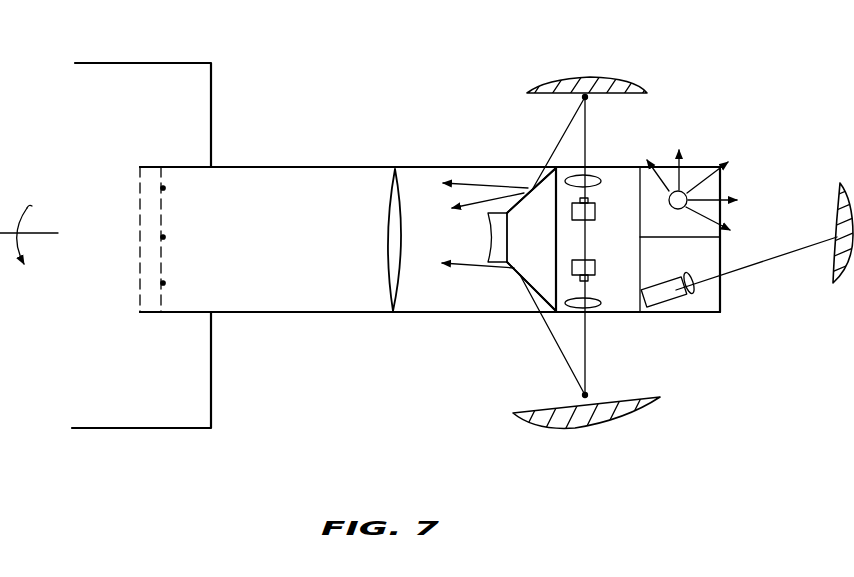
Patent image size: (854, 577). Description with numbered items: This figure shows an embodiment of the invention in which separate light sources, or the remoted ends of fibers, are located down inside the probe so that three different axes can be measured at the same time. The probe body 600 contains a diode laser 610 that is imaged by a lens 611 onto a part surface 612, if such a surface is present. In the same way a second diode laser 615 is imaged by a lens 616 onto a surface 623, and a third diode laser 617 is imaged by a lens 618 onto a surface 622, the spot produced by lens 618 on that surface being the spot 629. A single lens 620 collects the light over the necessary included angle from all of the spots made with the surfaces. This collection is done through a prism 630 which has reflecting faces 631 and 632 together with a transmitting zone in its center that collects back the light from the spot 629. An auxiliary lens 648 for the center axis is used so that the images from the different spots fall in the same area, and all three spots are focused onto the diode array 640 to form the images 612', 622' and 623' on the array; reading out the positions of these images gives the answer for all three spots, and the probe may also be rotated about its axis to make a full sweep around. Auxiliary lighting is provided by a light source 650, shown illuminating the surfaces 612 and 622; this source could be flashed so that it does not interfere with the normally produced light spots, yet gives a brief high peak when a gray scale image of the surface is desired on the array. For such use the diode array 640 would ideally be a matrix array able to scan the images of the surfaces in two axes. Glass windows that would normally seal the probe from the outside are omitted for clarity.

The probe body 600 is at (356, 167).
The diode array 640 is at (140, 220).
The image of spot on surface 623 623' is at (198, 190).
The image of spot on surface 622 622' is at (200, 239).
The image of spot on surface 612 612' is at (200, 284).
The single collecting lens 620 is at (392, 268).
The concave lens element 648 is at (489, 240).
The prism 630 is at (512, 249).
The reflecting face of prism 631 is at (531, 189).
The reflecting face of prism 632 is at (521, 283).
The part surface 612 is at (604, 65).
The lens 611 is at (596, 178).
The diode laser 610 is at (596, 209).
The diode laser 615 is at (597, 268).
The lens 616 is at (598, 305).
The light source 650 is at (689, 191).
The diode laser 617 is at (675, 302).
The lens 618 is at (700, 292).
The spot 629 is at (836, 236).
The surface 622 is at (831, 266).
The surface 623 is at (604, 425).